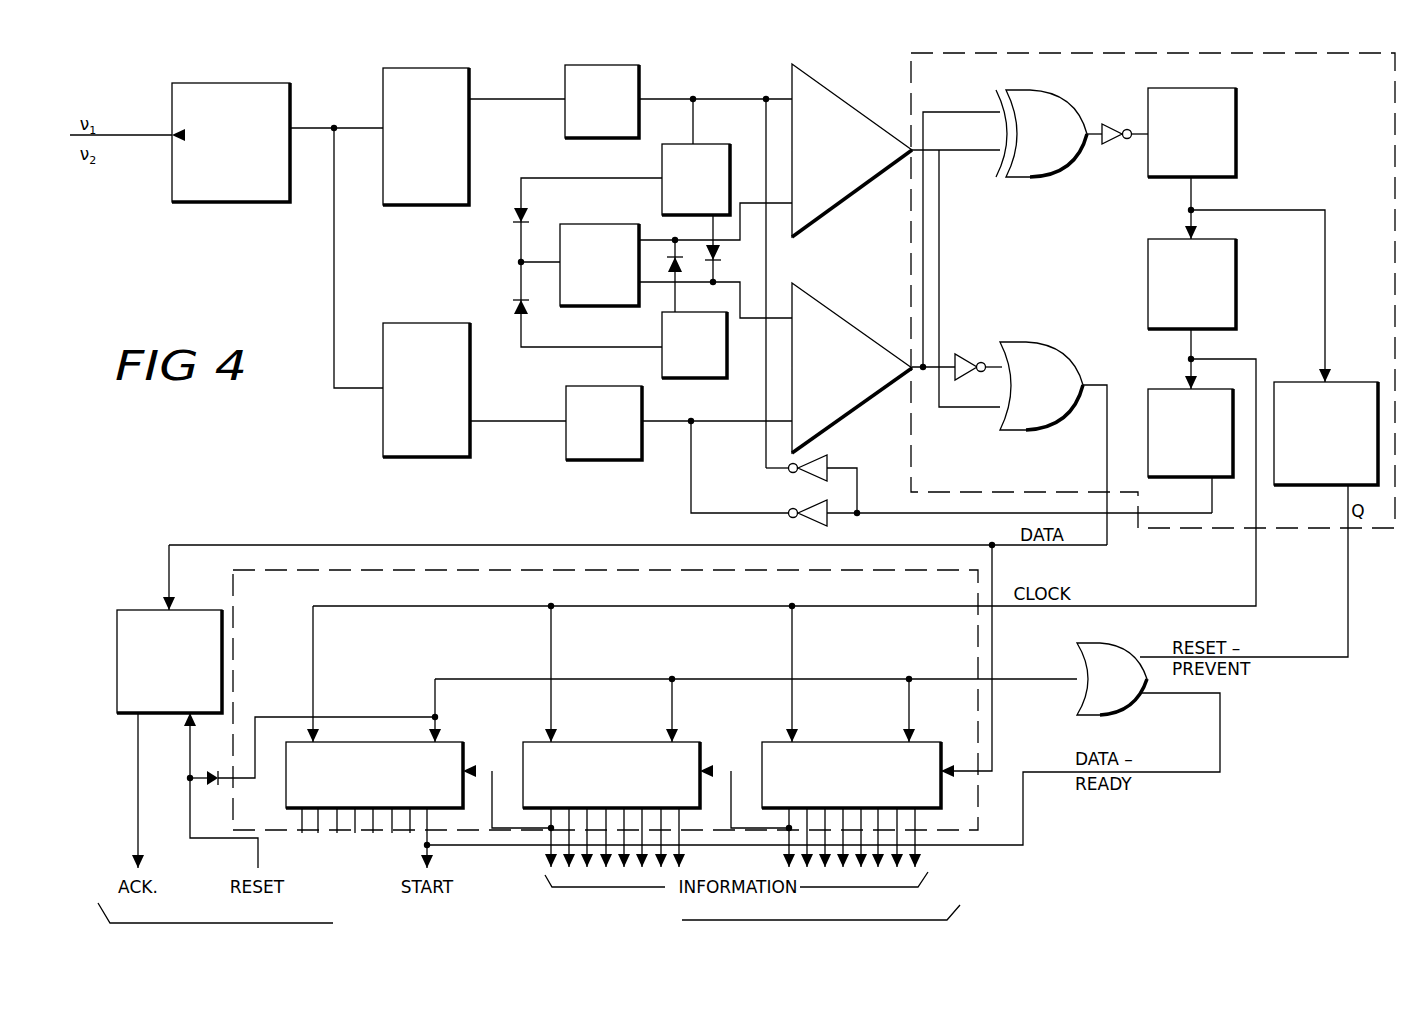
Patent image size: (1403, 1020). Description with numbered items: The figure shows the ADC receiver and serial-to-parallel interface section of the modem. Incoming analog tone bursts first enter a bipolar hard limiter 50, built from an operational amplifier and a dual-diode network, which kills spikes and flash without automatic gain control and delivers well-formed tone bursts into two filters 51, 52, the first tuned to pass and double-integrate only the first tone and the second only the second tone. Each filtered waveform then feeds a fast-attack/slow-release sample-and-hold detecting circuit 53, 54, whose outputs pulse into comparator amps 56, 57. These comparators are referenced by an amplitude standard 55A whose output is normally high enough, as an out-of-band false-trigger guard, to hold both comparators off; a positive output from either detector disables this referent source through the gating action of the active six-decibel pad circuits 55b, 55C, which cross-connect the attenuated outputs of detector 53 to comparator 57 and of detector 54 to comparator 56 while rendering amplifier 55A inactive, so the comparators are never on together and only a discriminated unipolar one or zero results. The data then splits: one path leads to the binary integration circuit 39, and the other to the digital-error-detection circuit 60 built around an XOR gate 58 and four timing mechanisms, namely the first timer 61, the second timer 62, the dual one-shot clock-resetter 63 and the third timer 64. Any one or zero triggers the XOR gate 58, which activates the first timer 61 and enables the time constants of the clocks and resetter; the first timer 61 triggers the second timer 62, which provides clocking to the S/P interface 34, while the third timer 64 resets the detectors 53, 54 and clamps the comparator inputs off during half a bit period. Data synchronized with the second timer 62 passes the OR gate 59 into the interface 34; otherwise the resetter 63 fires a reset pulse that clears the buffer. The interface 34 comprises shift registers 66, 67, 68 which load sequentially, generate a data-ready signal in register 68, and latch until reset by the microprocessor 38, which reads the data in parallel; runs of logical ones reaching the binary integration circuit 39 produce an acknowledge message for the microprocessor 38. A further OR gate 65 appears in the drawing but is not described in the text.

The serial-to-parallel digital interface 34 is at (255, 608).
The microprocessor 38 is at (529, 916).
The binary integration circuit 39 is at (125, 633).
The bipolar hard limiter 50 is at (231, 202).
The filter 51 is at (430, 205).
The filter 52 is at (400, 432).
The sample-and-hold detecting circuit 53 is at (578, 115).
The sample-and-hold detecting circuit 54 is at (591, 443).
The amplitude standard 55A is at (599, 265).
The active 6 dB pad circuit 55b is at (696, 179).
The active 6 dB pad circuit 55C is at (694, 345).
The comparator amp 56 is at (840, 117).
The comparator amp 57 is at (845, 395).
The XOR gate 58 is at (1040, 157).
The OR gate 59 is at (1040, 415).
The digital-error-detection circuit 60 is at (1153, 290).
The first timer 61 is at (1222, 152).
The second timer 62 is at (1222, 297).
The dual one-shot clock-resetter 63 is at (1340, 393).
The third timer 64 is at (1168, 397).
The OR gate 65 is at (1098, 683).
The shift register 66 is at (851, 804).
The shift register 67 is at (611, 804).
The shift register 68 is at (374, 787).